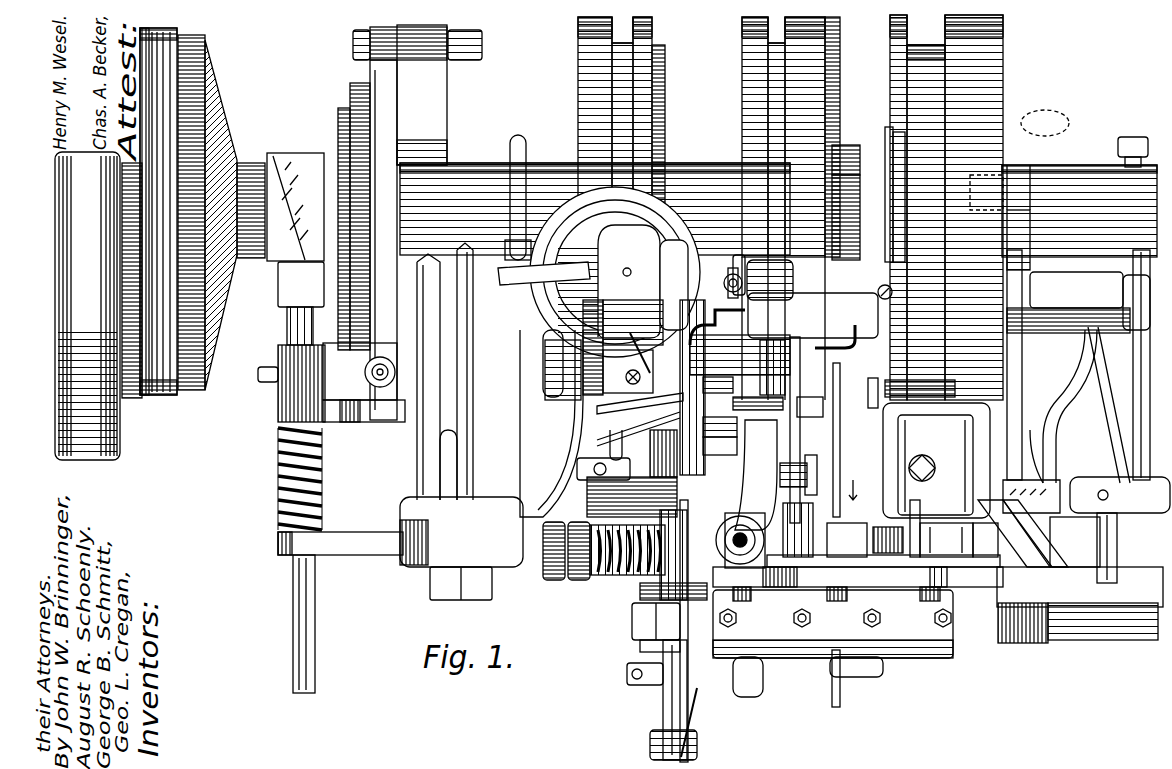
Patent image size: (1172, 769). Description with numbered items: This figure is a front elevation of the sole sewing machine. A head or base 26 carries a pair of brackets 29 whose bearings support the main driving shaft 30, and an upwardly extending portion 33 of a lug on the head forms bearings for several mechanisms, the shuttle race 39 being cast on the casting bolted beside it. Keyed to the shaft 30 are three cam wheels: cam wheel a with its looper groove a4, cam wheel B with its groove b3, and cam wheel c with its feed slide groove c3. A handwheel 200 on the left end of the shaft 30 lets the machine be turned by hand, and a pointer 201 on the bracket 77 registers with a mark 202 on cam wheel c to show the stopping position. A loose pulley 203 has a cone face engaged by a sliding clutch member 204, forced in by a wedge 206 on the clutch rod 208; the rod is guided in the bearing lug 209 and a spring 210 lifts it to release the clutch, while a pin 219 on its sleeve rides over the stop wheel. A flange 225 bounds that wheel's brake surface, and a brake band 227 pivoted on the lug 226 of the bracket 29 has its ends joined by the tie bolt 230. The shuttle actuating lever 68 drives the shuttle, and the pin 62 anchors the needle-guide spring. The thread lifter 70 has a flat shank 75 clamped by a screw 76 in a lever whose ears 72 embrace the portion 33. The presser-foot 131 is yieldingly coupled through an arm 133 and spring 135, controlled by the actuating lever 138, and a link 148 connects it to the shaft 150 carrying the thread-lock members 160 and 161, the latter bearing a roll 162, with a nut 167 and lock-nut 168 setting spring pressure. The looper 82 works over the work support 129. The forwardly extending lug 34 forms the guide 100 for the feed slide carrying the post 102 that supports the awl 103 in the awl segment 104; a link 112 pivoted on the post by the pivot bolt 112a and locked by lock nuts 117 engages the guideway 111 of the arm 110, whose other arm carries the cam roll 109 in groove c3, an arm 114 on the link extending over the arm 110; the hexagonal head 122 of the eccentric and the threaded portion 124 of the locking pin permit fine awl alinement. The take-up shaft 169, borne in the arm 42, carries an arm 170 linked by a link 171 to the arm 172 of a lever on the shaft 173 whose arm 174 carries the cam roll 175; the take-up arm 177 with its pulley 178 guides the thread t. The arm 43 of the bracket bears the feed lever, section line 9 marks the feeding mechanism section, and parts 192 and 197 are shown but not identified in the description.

The handwheel 200 is at (87, 306).
The loose pulley 203 is at (161, 397).
The sliding clutch member 204 is at (199, 392).
The wedge 206 is at (295, 249).
The spring 210 is at (325, 472).
The bearing lug 209 is at (340, 543).
The clutch rod 208 is at (316, 622).
The flange 225 is at (360, 86).
The lug 226 is at (408, 222).
The brake band 227 is at (377, 34).
The pin 219 is at (364, 382).
The tie bolt 230 is at (396, 370).
The brackets 29 is at (432, 442).
The head 26 is at (750, 548).
The main driving shaft 30 is at (672, 183).
The cam wheel A a is at (645, 110).
The cam groove a4 is at (638, 38).
The cam wheel B is at (805, 110).
The cam groove b3 is at (820, 38).
The cam wheel C c is at (990, 92).
The cam groove c3 is at (926, 40).
The shuttle race 39 is at (615, 271).
The pin 62 is at (658, 250).
The upwardly extending portion 33 is at (575, 327).
The flat shank 75 is at (741, 254).
The clamping screw 76 is at (758, 280).
The thread lifter 70 is at (717, 326).
The ears 72 is at (820, 311).
The bracket 77 is at (856, 352).
The actuating lever 138 is at (825, 405).
The cam roll 109 is at (922, 397).
The forwardly extending arm 43 is at (936, 460).
The section line 9 is at (851, 480).
The rod 192 is at (840, 443).
The link 148 is at (822, 475).
The lock nuts 117 is at (800, 500).
The post 102 is at (746, 475).
The hexagonal head 122 is at (740, 520).
The awl 103 is at (700, 415).
The awl segment 104 is at (720, 442).
The presser-foot 131 is at (703, 380).
The shuttle actuating lever 68 is at (560, 398).
The work support 129 is at (597, 410).
The looper 82 is at (597, 443).
The threaded portion 124 is at (748, 590).
The pivot bolt 112a is at (738, 618).
The guide 100 is at (833, 633).
The forwardly extending lug 34 is at (792, 667).
The pin 197 is at (840, 689).
The link 112 is at (876, 556).
The guideway 111 is at (895, 560).
The arm 110 is at (948, 555).
The arm 114 is at (1014, 533).
The arm 42 is at (1035, 533).
The link 171 is at (1117, 541).
The arm 170 is at (1125, 642).
The take-up shaft 169 is at (692, 637).
The take-up arm 177 is at (663, 705).
The thread pulley 178 is at (655, 760).
The thread t is at (698, 697).
The shaft 150 is at (622, 576).
The lock-nut 168 is at (553, 582).
The nut 167 is at (575, 582).
The roll 162 is at (648, 602).
The lock member 161 is at (640, 620).
The lock member 160 is at (648, 645).
The arm 174 is at (1035, 230).
The shaft 173 is at (1078, 302).
The cam roll 175 is at (985, 175).
The pointer 201 is at (887, 133).
The mark 202 is at (896, 148).
The spring 135 is at (832, 190).
The arm 133 is at (832, 205).
The arm 172 is at (1133, 428).